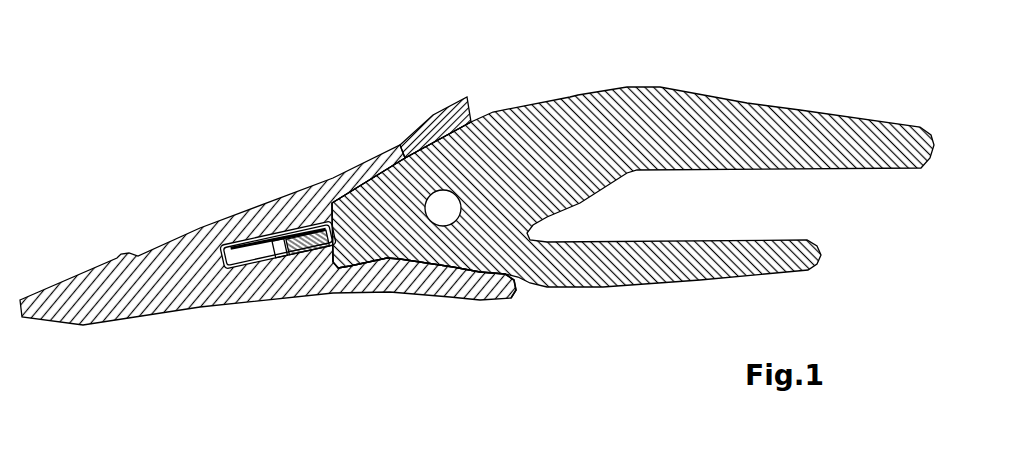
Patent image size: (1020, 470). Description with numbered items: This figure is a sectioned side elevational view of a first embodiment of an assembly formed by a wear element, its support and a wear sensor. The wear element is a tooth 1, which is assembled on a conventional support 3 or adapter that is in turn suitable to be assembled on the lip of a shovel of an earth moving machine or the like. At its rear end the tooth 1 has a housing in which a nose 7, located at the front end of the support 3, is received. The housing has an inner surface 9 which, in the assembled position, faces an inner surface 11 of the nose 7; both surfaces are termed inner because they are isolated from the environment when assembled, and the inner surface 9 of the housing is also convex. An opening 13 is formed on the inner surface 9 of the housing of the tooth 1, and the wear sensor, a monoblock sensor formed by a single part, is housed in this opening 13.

The tooth 1 is at (203, 253).
The support 3 is at (626, 100).
The nose 7 is at (385, 258).
The inner surface of the housing 9 is at (347, 197).
The inner surface of the nose 11 is at (406, 156).
The opening 13 is at (240, 272).